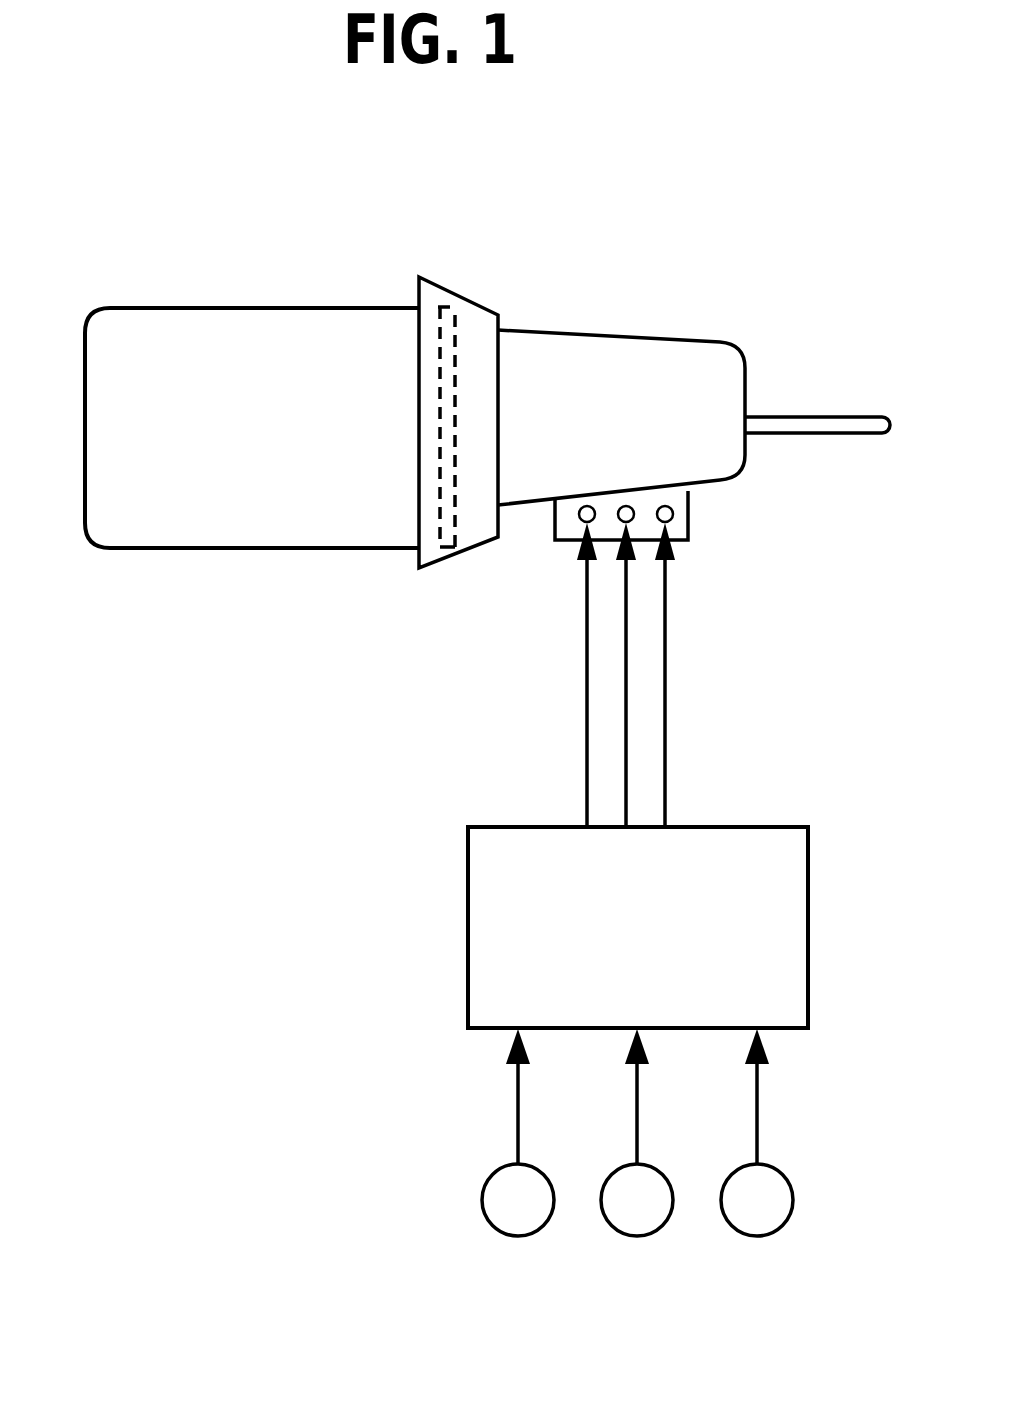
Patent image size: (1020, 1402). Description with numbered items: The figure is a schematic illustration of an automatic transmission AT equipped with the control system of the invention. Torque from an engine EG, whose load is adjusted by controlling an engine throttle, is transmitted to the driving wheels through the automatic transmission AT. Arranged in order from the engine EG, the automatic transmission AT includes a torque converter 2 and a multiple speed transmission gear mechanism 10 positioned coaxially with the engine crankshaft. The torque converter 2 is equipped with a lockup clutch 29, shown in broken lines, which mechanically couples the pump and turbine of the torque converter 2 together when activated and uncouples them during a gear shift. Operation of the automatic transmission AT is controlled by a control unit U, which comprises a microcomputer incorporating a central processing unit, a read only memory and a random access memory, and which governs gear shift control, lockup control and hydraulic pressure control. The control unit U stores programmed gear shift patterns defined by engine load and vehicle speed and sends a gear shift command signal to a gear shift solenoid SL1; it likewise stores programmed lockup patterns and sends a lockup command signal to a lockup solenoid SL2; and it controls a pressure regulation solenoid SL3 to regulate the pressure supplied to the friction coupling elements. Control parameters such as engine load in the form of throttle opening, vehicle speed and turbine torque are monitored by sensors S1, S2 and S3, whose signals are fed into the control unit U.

The engine EG is at (237, 308).
The automatic transmission AT is at (512, 298).
The torque converter 2 is at (417, 277).
The lockup clutch 29 is at (452, 305).
The transmission gear mechanism 10 is at (710, 340).
The gear shift solenoid SL1 is at (673, 512).
The lockup solenoid SL2 is at (660, 526).
The pressure regulation solenoid SL3 is at (578, 520).
The control unit U is at (808, 853).
The sensor S1 is at (517, 1237).
The sensor S2 is at (636, 1237).
The sensor S3 is at (756, 1237).